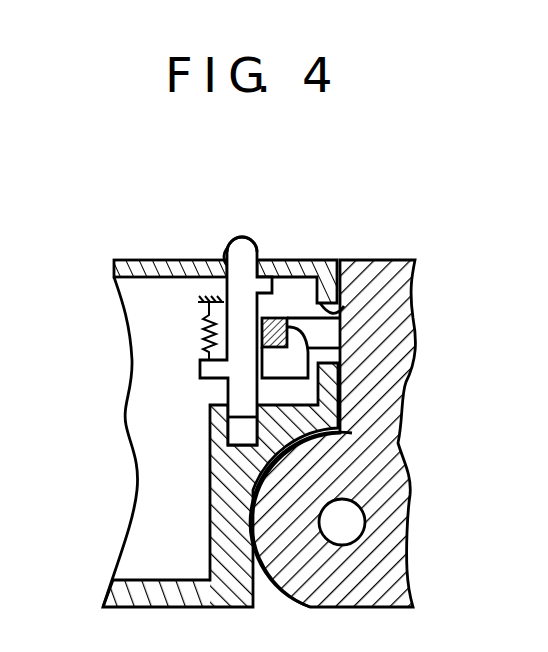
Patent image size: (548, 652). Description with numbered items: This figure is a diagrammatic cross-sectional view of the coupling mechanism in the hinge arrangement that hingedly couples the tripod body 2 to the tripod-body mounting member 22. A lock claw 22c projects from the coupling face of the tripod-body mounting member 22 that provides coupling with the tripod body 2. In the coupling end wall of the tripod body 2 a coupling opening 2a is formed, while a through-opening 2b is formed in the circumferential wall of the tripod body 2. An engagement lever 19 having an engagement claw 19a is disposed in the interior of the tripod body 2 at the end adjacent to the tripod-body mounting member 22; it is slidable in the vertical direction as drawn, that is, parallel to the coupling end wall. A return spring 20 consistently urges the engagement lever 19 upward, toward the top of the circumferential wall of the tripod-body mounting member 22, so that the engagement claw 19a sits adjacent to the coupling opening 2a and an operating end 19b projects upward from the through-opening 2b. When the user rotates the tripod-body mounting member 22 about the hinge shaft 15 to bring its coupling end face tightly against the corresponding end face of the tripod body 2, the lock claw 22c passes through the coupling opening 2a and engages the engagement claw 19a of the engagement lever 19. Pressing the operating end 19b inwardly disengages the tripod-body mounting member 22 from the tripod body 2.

The tripod body 2 is at (147, 267).
The coupling opening 2a is at (377, 272).
The through-opening 2b is at (233, 250).
The hinge shaft 15 is at (345, 511).
The engagement lever 19 is at (246, 233).
The engagement claw 19a is at (300, 327).
The operating end 19b is at (255, 242).
The return spring 20 is at (203, 342).
The tripod-body mounting member 22 is at (404, 262).
The lock claw 22c is at (279, 318).